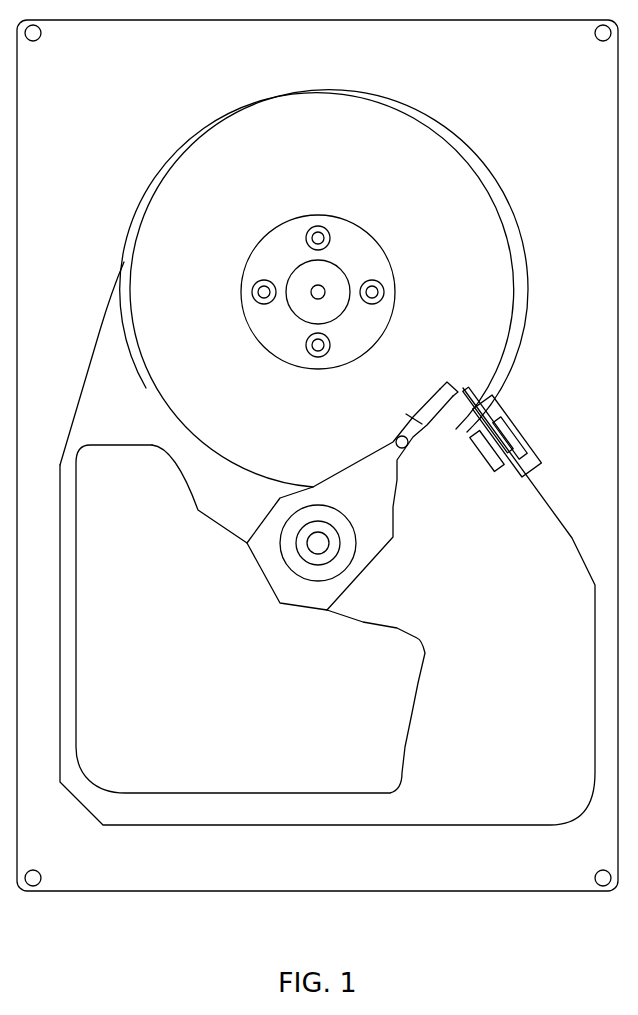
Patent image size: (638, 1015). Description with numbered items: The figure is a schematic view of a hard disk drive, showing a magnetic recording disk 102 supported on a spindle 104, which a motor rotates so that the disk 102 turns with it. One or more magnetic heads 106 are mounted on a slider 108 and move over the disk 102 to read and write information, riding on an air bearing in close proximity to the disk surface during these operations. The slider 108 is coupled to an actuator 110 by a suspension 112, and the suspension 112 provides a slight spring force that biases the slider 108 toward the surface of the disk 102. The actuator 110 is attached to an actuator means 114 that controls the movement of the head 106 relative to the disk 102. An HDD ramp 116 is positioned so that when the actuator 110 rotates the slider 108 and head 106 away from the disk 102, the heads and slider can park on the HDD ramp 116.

The disk 102 is at (230, 157).
The spindle 104 is at (307, 275).
The magnetic head 106 is at (441, 387).
The slider 108 is at (405, 415).
The actuator 110 is at (320, 543).
The suspension 112 is at (373, 495).
The actuator means 114 is at (387, 713).
The HDD ramp 116 is at (513, 474).